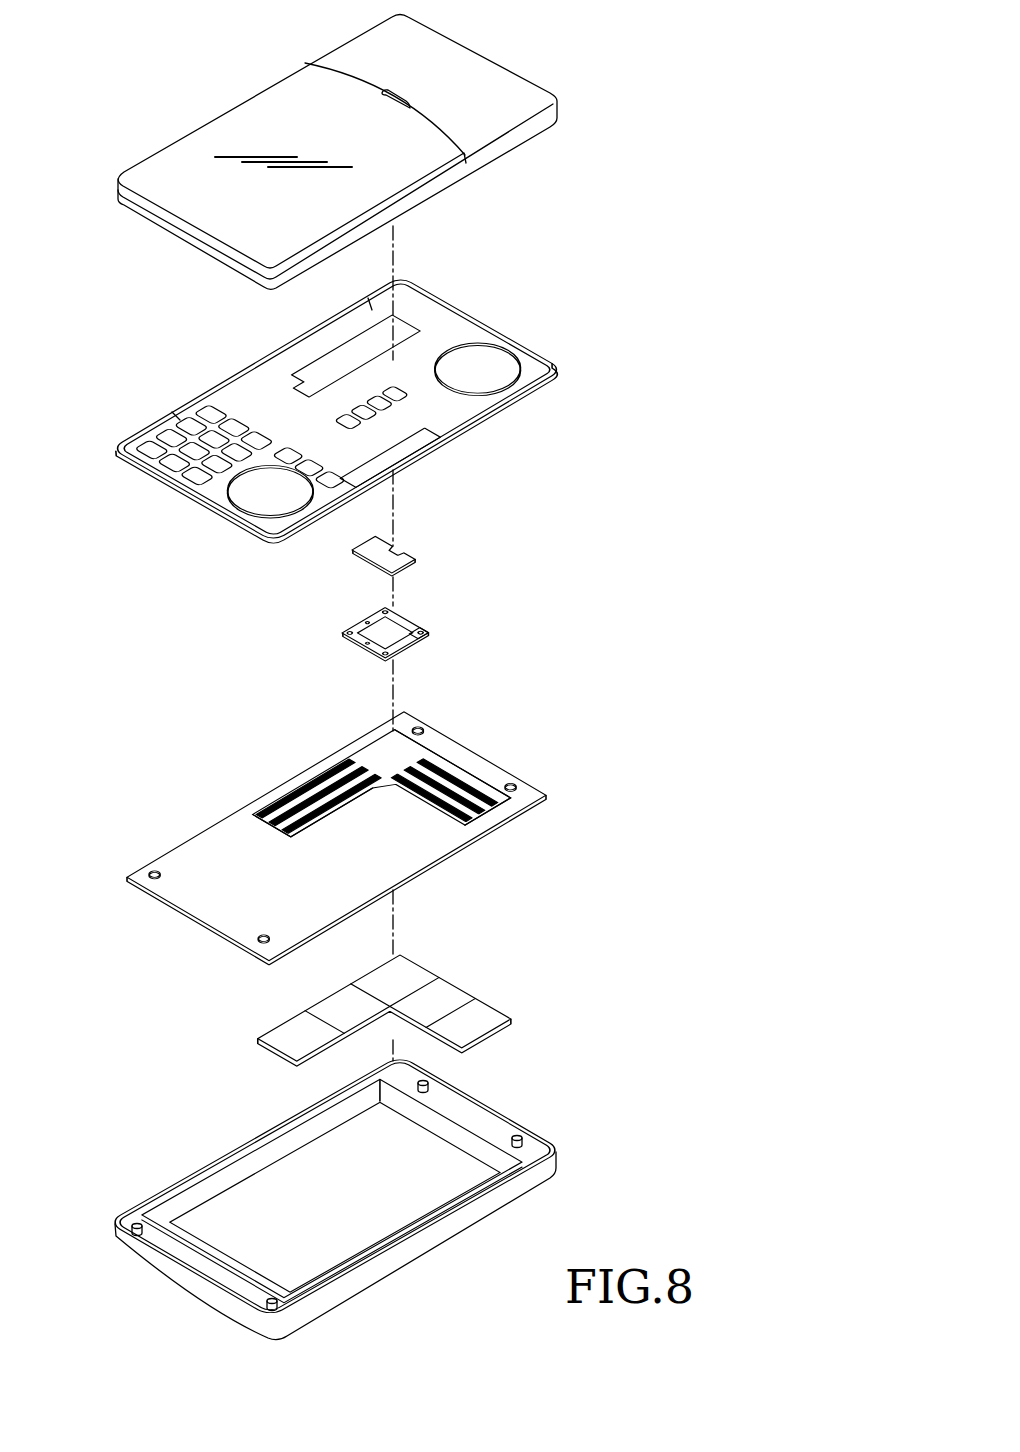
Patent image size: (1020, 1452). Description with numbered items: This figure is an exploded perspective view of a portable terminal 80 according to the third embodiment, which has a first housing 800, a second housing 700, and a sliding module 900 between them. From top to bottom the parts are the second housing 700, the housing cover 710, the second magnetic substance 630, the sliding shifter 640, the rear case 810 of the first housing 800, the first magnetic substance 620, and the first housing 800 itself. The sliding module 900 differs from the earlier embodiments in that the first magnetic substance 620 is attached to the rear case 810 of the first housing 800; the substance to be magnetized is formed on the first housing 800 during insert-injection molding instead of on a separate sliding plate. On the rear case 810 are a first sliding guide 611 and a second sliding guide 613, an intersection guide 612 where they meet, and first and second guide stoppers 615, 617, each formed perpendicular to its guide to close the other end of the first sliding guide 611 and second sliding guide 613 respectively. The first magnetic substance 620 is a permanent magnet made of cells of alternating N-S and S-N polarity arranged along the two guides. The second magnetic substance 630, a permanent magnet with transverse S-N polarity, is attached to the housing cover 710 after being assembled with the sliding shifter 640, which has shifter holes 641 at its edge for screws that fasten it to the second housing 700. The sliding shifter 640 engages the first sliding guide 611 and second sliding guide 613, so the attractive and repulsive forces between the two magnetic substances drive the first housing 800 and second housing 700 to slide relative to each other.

The portable terminal 80 is at (65, 121).
The second housing 700 is at (226, 90).
The housing cover 710 is at (458, 323).
The second magnetic substance 630 is at (411, 540).
The sliding shifter 640 is at (411, 609).
The shifter holes 641 is at (428, 631).
The sliding module 900 is at (350, 821).
The rear case 810 is at (185, 860).
The intersection guide 612 is at (415, 752).
The first sliding guide 611 is at (290, 797).
The second sliding guide 613 is at (458, 783).
The first guide stopper 615 is at (257, 823).
The second guide stopper 617 is at (493, 812).
The first magnetic substance 620 is at (473, 983).
The first housing 800 is at (508, 1100).